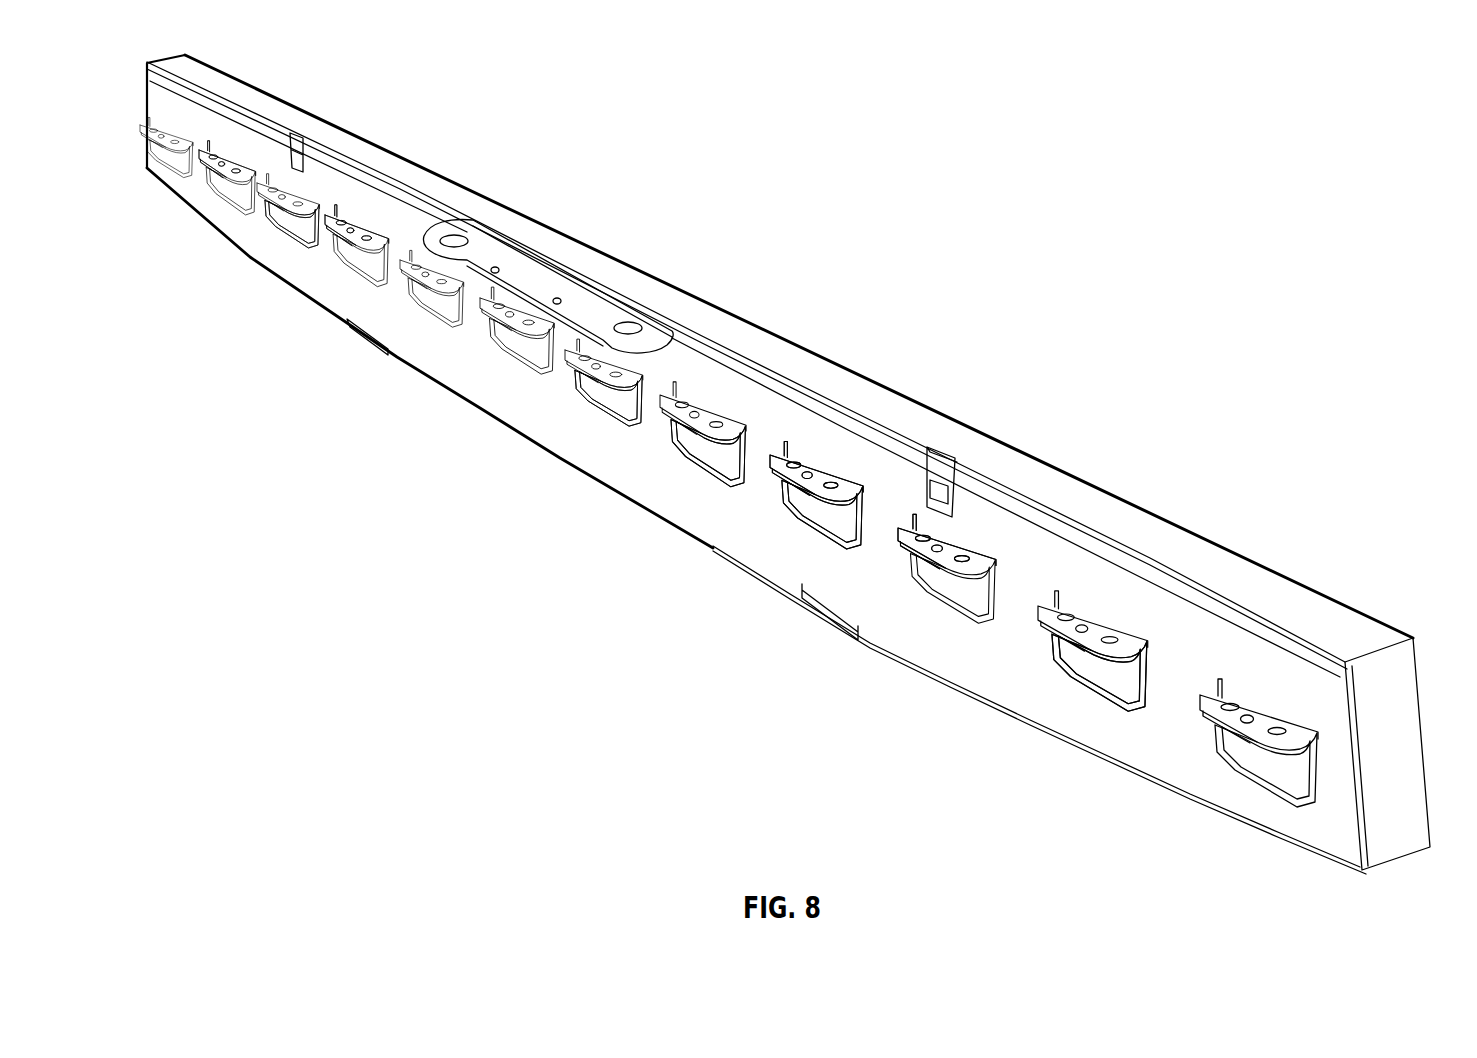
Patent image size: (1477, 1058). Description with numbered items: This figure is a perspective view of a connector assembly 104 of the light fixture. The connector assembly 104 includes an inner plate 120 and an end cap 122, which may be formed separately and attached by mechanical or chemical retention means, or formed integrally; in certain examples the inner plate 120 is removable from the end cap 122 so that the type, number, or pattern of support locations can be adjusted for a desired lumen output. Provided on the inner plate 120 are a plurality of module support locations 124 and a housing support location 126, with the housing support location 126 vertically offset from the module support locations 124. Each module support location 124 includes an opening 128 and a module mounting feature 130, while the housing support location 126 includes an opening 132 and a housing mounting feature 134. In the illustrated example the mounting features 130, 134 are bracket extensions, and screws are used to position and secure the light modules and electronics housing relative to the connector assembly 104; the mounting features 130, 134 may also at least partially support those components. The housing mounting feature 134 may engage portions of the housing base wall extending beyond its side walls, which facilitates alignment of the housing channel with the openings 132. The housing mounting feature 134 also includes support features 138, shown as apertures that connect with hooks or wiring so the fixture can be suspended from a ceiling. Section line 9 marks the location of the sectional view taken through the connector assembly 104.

The section line 9 is at (725, 163).
The connector assembly 104 is at (876, 178).
The inner plate 120 is at (925, 645).
The end cap 122 is at (1400, 737).
The module support location 124 is at (173, 173).
The housing support location 126 is at (522, 292).
The opening 128 is at (287, 238).
The module mounting feature 130 is at (215, 150).
The opening 132 is at (598, 288).
The housing mounting feature 134 is at (405, 283).
The support feature 138 is at (456, 238).